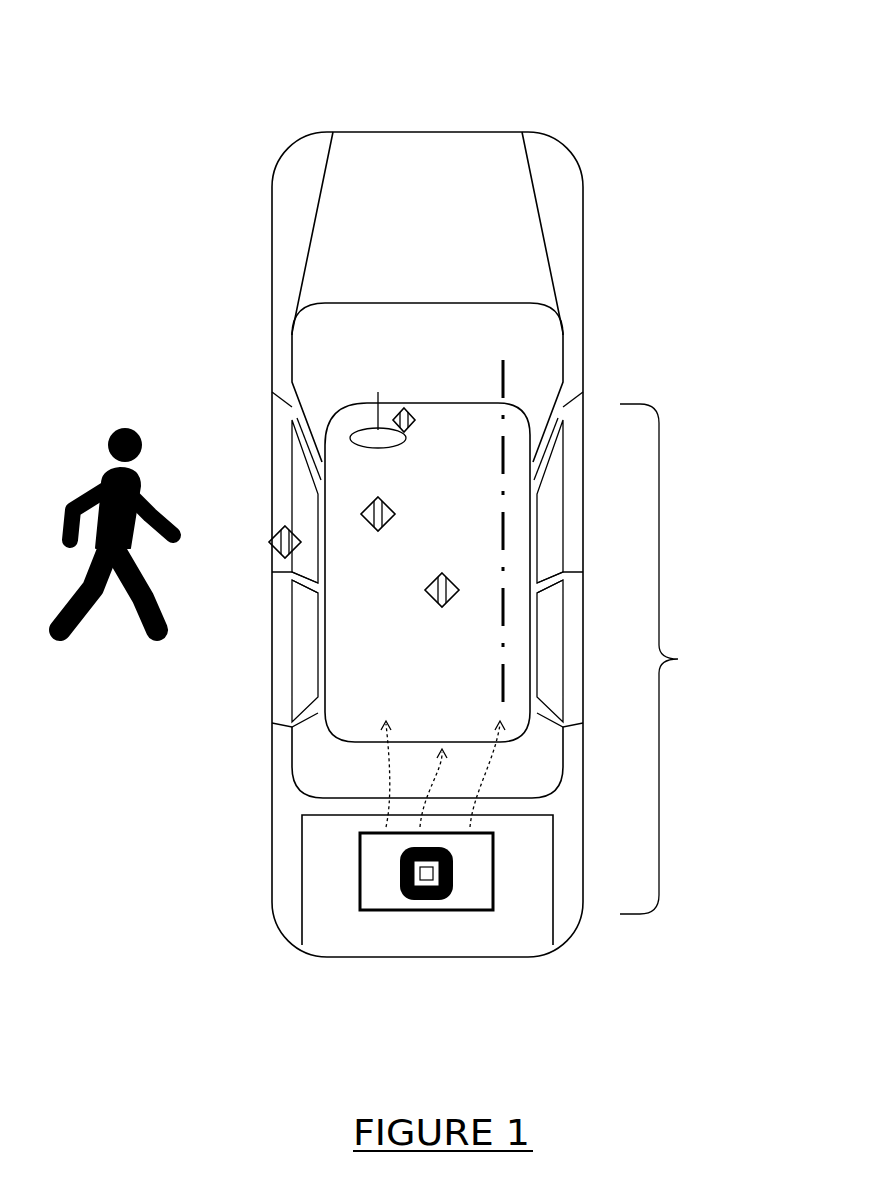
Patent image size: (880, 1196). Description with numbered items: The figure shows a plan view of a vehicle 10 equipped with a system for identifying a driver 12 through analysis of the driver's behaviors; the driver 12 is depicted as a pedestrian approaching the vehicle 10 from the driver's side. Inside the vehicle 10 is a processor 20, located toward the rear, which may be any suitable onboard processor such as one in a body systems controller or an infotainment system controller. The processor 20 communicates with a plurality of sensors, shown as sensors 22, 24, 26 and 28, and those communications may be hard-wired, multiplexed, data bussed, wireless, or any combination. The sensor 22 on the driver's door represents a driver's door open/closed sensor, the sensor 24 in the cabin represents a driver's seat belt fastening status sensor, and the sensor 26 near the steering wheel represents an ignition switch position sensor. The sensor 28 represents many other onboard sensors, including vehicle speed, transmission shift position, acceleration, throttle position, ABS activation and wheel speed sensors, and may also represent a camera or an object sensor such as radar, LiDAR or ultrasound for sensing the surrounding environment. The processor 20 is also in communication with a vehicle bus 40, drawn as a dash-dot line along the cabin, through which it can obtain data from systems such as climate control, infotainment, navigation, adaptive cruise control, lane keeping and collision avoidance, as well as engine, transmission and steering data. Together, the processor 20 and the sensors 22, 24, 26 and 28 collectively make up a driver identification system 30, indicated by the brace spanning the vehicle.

The vehicle 10 is at (547, 137).
The driver 12 is at (72, 637).
The processor 20 is at (455, 912).
The driver's door open/closed sensor 22 is at (290, 553).
The driver's seat belt fastening status sensor 24 is at (390, 520).
The ignition switch position sensor 26 is at (408, 428).
The sensor 28 is at (450, 607).
The driver identification system 30 is at (677, 659).
The vehicle bus 40 is at (497, 387).